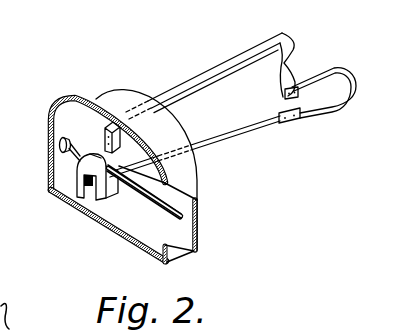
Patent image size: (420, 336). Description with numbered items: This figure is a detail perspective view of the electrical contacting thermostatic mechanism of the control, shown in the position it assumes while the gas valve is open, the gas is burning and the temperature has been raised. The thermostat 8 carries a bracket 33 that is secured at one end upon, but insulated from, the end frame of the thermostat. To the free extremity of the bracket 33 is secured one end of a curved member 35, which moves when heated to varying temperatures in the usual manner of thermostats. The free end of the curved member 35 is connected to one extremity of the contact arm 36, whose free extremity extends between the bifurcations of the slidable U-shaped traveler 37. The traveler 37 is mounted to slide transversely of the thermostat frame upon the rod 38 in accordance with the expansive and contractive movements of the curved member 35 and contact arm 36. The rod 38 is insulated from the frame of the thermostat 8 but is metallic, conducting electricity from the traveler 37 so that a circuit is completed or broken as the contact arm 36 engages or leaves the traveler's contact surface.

The thermostat 8 is at (99, 95).
The bracket 33 is at (197, 77).
The curved member 35 is at (344, 70).
The contact arm 36 is at (229, 134).
The slidable U-shaped traveler 37 is at (52, 190).
The rod 38 is at (173, 203).